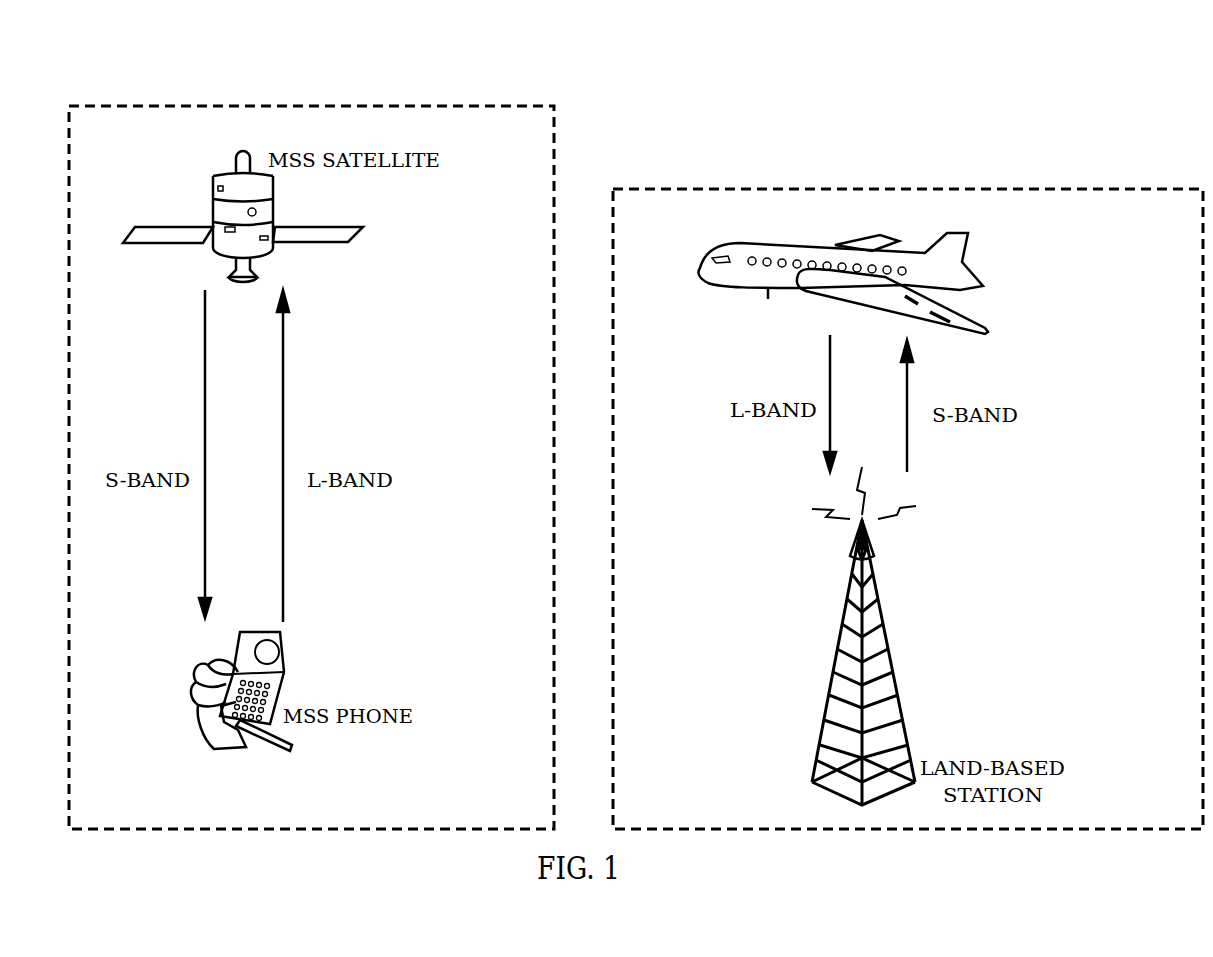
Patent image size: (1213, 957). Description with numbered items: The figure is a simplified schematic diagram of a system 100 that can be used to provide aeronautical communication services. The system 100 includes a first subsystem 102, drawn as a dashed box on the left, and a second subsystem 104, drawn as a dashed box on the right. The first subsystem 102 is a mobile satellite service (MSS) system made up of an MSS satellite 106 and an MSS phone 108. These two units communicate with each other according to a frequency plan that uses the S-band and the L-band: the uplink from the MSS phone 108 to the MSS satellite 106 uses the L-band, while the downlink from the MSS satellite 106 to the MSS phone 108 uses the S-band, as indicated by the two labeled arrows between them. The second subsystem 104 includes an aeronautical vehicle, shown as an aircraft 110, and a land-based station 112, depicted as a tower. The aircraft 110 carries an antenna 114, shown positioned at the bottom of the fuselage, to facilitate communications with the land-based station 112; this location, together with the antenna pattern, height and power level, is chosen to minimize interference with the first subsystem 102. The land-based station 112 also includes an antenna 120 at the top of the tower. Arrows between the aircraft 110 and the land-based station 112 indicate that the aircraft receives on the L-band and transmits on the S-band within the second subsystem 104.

The system 100 is at (933, 66).
The first subsystem 102 is at (446, 106).
The second subsystem 104 is at (1075, 189).
The MSS satellite 106 is at (216, 175).
The MSS phone 108 is at (288, 641).
The aircraft 110 is at (770, 243).
The land-based station 112 is at (1002, 754).
The antenna 114 is at (768, 299).
The antenna 120 is at (870, 551).